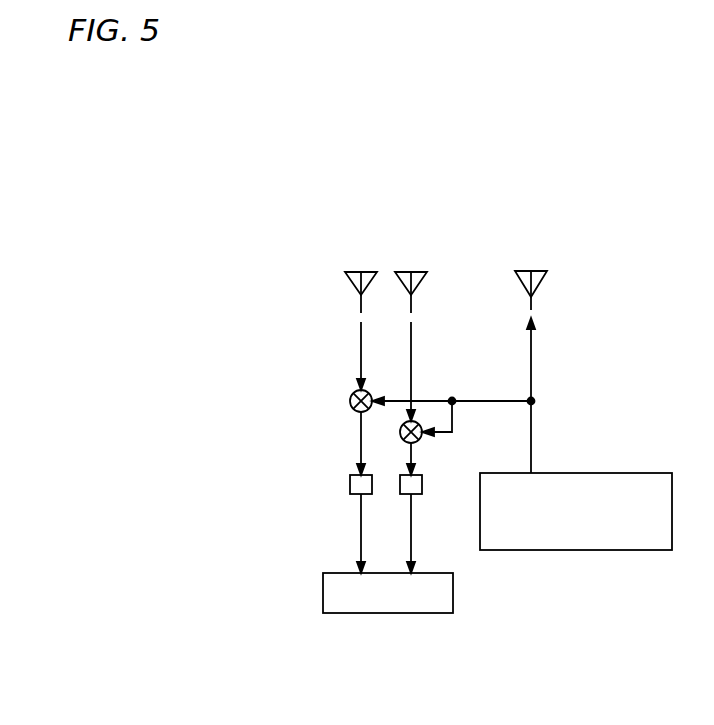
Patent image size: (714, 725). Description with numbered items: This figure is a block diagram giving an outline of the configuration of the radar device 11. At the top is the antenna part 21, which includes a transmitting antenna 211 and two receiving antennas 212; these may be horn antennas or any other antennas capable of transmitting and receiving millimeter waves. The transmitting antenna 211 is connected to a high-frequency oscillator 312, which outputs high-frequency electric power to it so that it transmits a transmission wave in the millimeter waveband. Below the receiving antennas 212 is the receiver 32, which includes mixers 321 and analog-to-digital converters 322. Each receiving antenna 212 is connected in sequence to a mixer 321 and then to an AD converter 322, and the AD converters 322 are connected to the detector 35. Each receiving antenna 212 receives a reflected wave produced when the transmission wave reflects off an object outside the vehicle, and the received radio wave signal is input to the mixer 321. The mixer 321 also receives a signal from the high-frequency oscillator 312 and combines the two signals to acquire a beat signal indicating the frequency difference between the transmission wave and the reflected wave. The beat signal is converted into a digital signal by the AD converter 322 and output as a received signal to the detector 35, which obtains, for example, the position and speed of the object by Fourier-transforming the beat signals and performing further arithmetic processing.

The radar device 11 is at (310, 203).
The antenna part 21 is at (420, 193).
The receiver 32 is at (250, 428).
The receiving antenna 212 is at (363, 272).
The transmitting antenna 211 is at (534, 271).
The mixer 321 is at (350, 400).
The AD converter 322 is at (350, 484).
The high-frequency oscillator 312 is at (597, 472).
The detector 35 is at (415, 614).